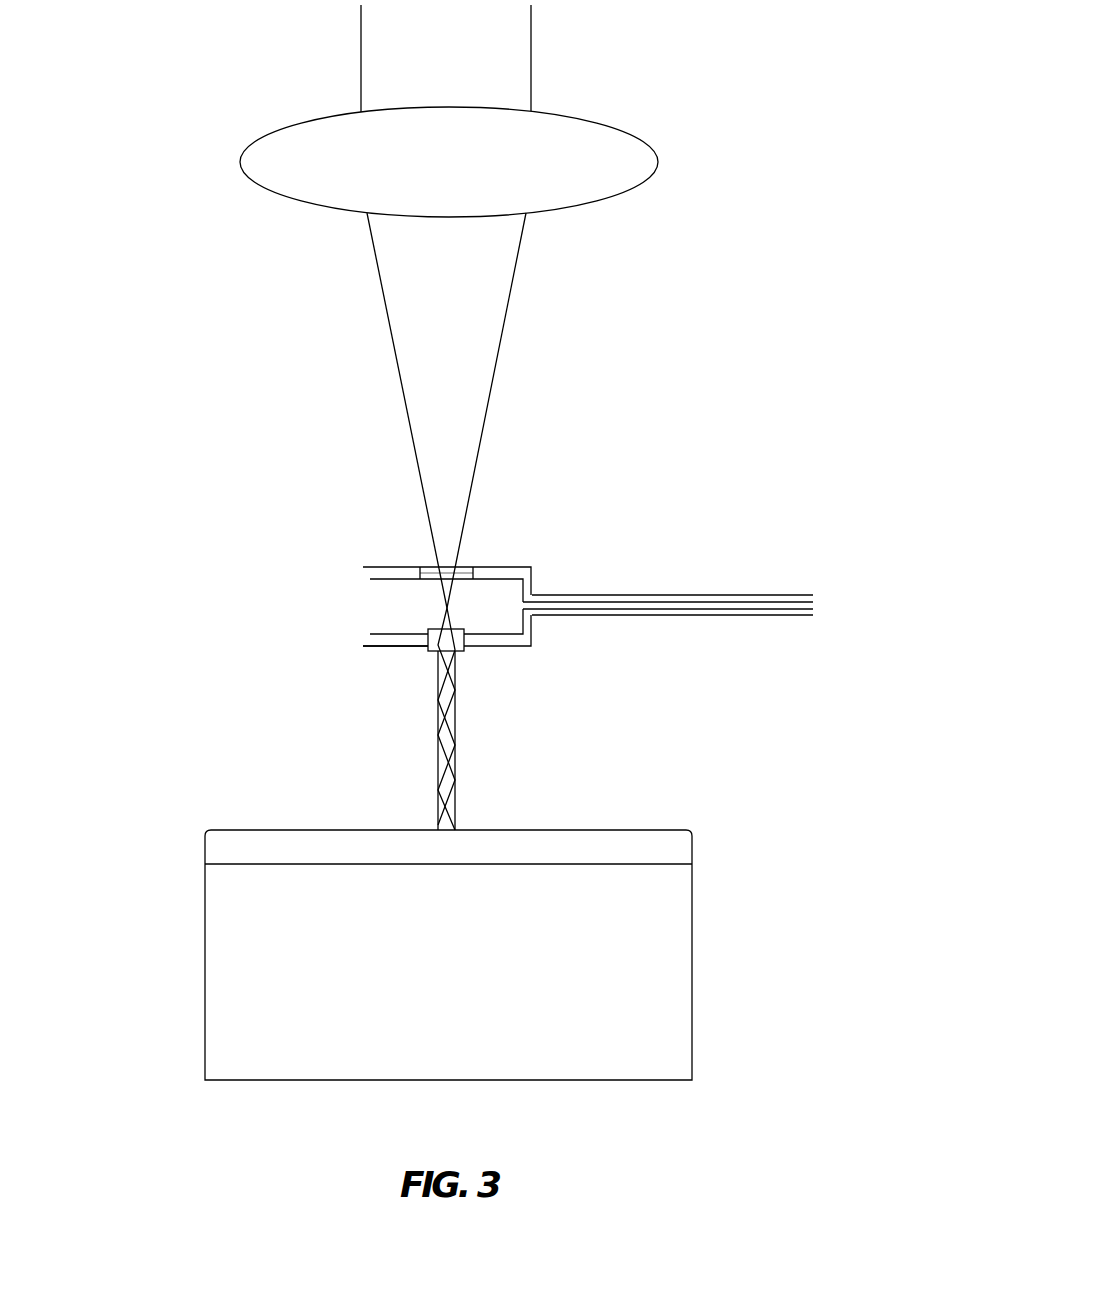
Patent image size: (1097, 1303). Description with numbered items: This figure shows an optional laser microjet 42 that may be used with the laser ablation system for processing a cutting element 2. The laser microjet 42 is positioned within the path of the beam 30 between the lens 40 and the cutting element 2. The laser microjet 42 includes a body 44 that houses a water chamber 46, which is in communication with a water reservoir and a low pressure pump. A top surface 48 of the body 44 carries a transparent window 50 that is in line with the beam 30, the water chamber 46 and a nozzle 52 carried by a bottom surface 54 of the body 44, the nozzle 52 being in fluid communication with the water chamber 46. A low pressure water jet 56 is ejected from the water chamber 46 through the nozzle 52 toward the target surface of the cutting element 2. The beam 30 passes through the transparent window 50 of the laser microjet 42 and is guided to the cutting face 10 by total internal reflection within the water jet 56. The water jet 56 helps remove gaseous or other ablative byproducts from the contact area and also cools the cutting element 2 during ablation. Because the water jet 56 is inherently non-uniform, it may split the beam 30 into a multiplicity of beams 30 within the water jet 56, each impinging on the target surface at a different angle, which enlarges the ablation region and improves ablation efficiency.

The cutting element 2 is at (155, 846).
The cutting face 10 is at (605, 830).
The beam 30 is at (490, 60).
The lens 40 is at (583, 138).
The laser microjet 42 is at (492, 607).
The body 44 is at (383, 574).
The water chamber 46 is at (500, 600).
The top surface 48 is at (467, 565).
The transparent window 50 is at (428, 573).
The nozzle 52 is at (435, 655).
The bottom surface 54 is at (367, 646).
The water jet 56 is at (463, 779).